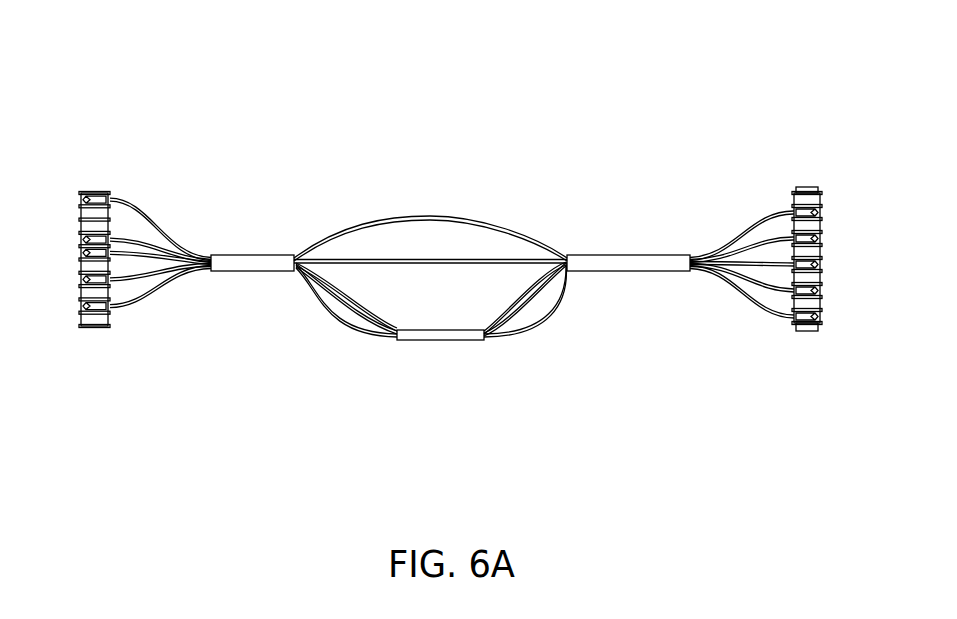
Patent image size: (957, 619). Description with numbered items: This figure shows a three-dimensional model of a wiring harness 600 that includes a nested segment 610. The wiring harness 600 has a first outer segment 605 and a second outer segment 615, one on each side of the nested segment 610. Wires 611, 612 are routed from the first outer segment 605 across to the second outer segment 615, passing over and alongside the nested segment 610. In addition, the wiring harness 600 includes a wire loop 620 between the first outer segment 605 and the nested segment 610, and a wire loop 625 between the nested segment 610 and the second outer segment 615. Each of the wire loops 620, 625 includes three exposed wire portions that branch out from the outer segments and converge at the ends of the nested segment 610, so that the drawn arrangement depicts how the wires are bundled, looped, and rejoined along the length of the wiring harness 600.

The wiring harness 600 is at (497, 81).
The first outer segment 605 is at (252, 254).
The nested segment 610 is at (442, 341).
The wire 611 is at (480, 218).
The wire 612 is at (420, 265).
The second outer segment 615 is at (628, 254).
The wire loop 620 is at (316, 341).
The wire loop 625 is at (562, 333).